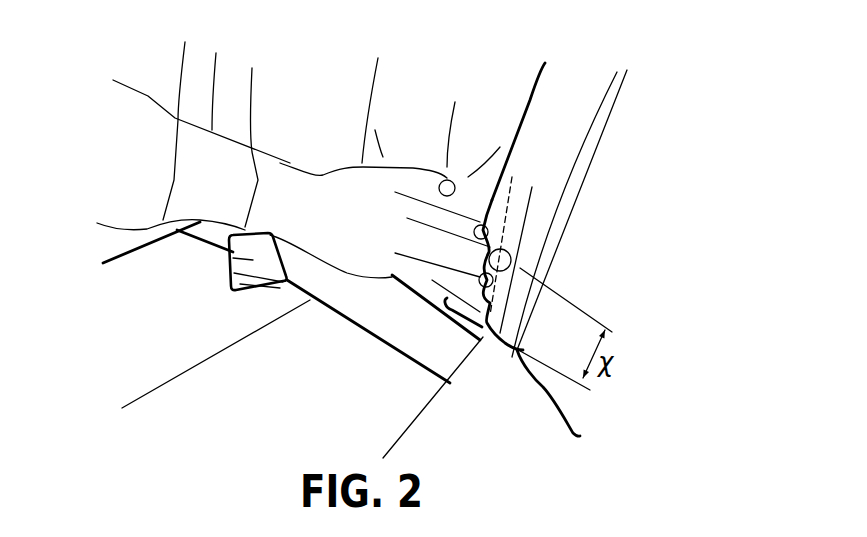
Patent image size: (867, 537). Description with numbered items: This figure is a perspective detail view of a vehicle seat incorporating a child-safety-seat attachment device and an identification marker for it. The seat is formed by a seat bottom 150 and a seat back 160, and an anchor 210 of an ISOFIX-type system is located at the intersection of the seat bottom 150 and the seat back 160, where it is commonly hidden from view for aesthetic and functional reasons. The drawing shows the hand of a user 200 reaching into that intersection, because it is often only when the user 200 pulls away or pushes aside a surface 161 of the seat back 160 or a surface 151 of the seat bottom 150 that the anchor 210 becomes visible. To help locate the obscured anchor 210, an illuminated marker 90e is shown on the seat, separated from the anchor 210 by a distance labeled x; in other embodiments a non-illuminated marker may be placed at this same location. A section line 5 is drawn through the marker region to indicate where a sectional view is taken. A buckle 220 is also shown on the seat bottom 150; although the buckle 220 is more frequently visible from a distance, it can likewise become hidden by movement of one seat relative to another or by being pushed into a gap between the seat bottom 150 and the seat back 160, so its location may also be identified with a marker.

The user 200 is at (288, 160).
The seat back 160 is at (575, 97).
The surface of the seat back 161 is at (560, 123).
The illuminated marker 90e is at (515, 267).
The section line 5- 5 is at (532, 187).
The buckle 220 is at (230, 257).
The surface of the seat bottom 151 is at (260, 365).
The seat bottom 150 is at (275, 408).
The anchor 210 is at (470, 325).